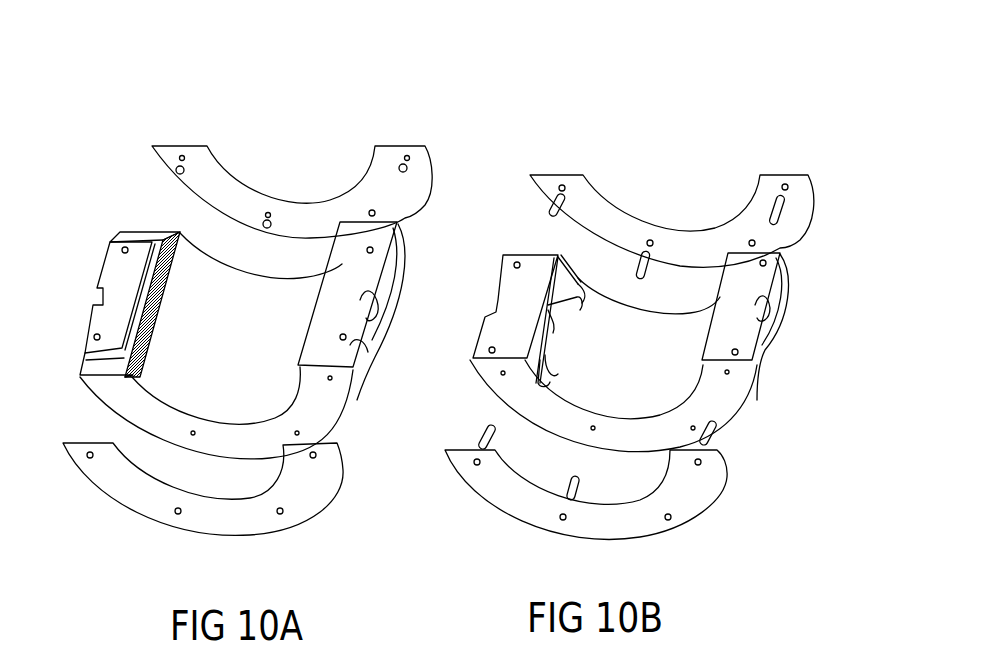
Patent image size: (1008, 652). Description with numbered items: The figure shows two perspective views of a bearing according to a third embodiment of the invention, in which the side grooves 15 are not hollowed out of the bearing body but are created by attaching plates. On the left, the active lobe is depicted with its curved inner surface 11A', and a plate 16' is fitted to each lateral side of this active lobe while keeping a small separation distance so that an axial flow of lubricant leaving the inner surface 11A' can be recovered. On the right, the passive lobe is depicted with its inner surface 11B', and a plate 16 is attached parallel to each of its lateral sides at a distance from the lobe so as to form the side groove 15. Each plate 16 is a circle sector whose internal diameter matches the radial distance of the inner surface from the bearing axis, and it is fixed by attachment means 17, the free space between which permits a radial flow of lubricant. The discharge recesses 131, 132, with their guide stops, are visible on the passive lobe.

In FIG. 10A, the plate 16' is at (292, 155).
In FIG. 10A, the inner surface of the active lobe 11A' is at (242, 340).
In FIG. 10B, the plate 16 is at (672, 192).
In FIG. 10B, the attachment means 17 is at (785, 212).
In FIG. 10B, the discharge recess 131 is at (553, 262).
In FIG. 10B, the discharge recess 132 is at (530, 356).
In FIG. 10B, the side groove 15 is at (550, 405).
In FIG. 10B, the inner surface of the passive lobe 11B' is at (629, 352).